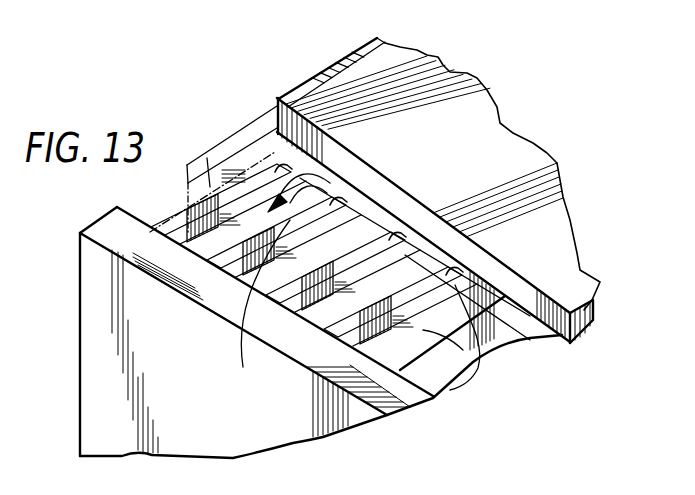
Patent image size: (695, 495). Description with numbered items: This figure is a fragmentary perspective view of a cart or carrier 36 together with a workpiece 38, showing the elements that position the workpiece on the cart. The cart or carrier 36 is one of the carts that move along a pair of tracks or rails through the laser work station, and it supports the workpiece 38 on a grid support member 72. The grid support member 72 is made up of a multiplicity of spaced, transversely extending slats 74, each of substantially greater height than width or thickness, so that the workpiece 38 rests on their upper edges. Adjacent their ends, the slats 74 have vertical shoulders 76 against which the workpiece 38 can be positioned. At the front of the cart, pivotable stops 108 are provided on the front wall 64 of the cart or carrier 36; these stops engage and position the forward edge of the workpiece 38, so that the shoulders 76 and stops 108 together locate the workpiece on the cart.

The cart or carrier 36 is at (97, 277).
The workpiece 38 is at (512, 220).
The front wall 64 is at (262, 162).
The grid support member 72 is at (241, 204).
The slats 74 is at (420, 330).
The vertical shoulders 76 is at (307, 303).
The pivotable stops 108 is at (342, 63).